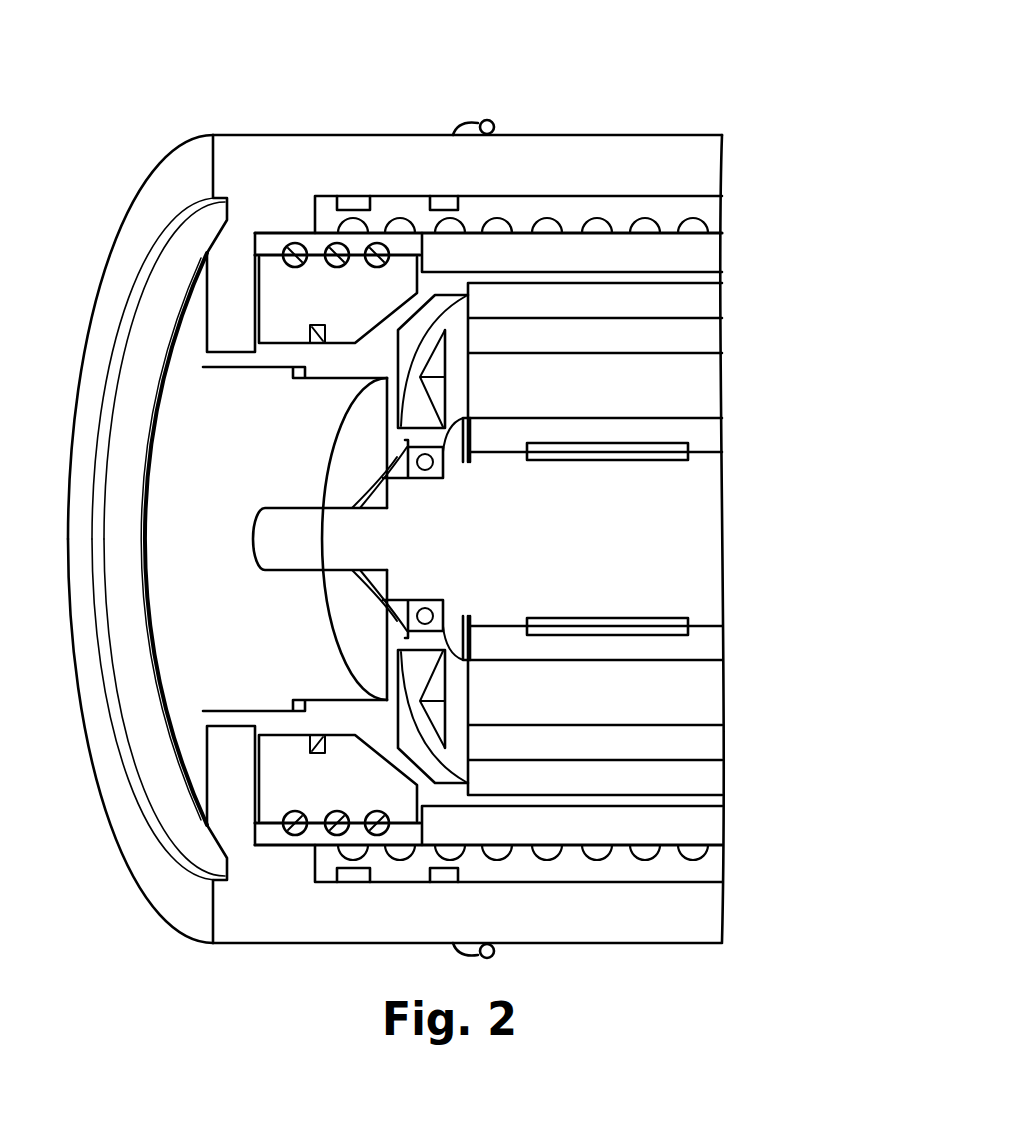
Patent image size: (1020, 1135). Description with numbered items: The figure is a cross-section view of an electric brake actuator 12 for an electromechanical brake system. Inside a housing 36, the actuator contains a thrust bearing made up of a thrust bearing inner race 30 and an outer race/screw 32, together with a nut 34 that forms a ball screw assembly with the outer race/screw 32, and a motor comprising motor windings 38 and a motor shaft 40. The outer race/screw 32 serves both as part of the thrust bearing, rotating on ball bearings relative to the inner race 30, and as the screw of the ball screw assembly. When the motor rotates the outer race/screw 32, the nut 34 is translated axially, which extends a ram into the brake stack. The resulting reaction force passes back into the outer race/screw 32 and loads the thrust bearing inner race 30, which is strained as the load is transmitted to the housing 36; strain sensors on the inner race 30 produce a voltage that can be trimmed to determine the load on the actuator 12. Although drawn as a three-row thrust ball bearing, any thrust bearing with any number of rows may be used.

The electric brake actuator 12 is at (626, 96).
The thrust bearing inner race 30 is at (296, 294).
The outer race/screw 32 is at (434, 244).
The nut 34 is at (566, 212).
The housing 36 is at (165, 322).
The motor windings 38 is at (678, 385).
The motor shaft 40 is at (645, 551).